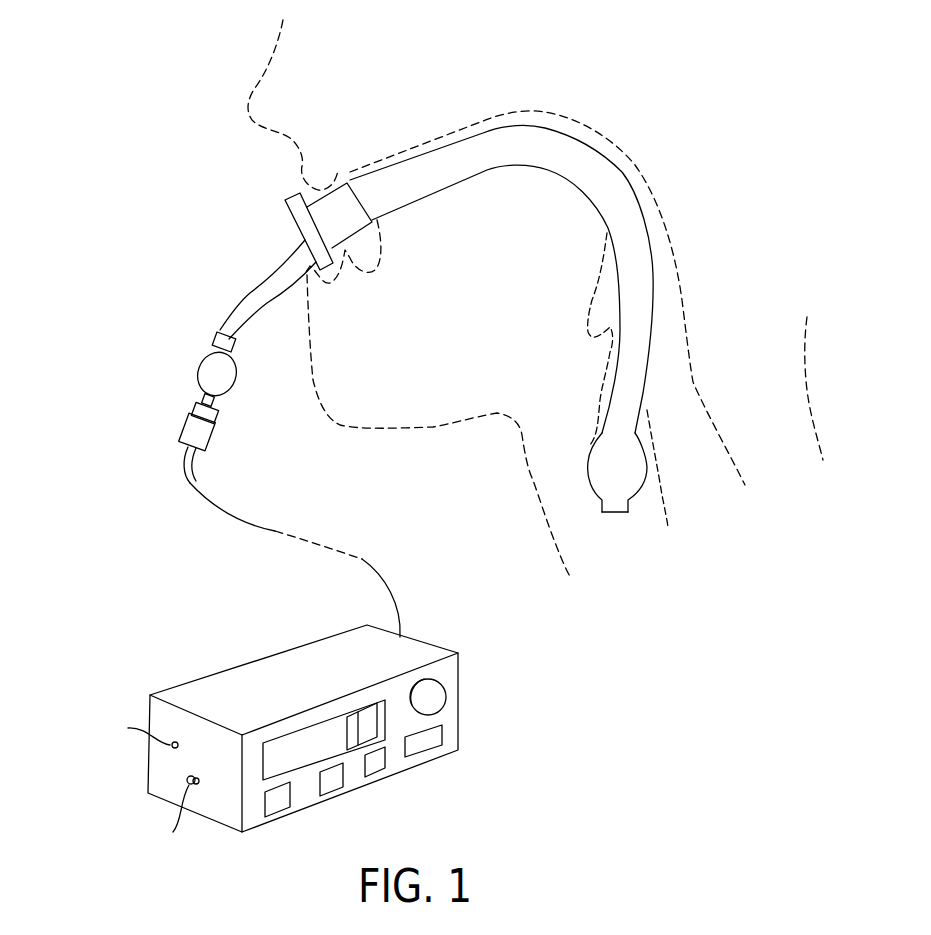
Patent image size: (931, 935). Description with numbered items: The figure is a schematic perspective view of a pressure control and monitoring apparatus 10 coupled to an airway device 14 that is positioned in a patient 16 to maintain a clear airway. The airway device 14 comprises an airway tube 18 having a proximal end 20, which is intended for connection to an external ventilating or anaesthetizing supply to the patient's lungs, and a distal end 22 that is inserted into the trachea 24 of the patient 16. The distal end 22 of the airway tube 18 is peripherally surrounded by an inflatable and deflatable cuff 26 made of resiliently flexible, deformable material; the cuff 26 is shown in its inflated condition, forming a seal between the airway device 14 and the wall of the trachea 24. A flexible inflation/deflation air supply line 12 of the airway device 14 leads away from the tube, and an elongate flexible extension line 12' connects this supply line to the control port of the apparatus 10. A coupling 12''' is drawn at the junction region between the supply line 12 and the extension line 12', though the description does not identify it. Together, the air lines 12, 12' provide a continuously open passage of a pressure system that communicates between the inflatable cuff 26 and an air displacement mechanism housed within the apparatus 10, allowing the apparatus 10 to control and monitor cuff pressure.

The pressure control and monitoring apparatus 10 is at (414, 794).
The inflation/deflation air supply line 12 is at (268, 293).
The extension line 12' is at (295, 557).
The coupling 12''' is at (199, 407).
The airway device 14 is at (534, 122).
The patient 16 is at (255, 52).
The airway tube 18 is at (603, 167).
The proximal end 20 is at (290, 217).
The distal end 22 is at (588, 423).
The trachea 24 is at (621, 521).
The cuff 26 is at (592, 471).